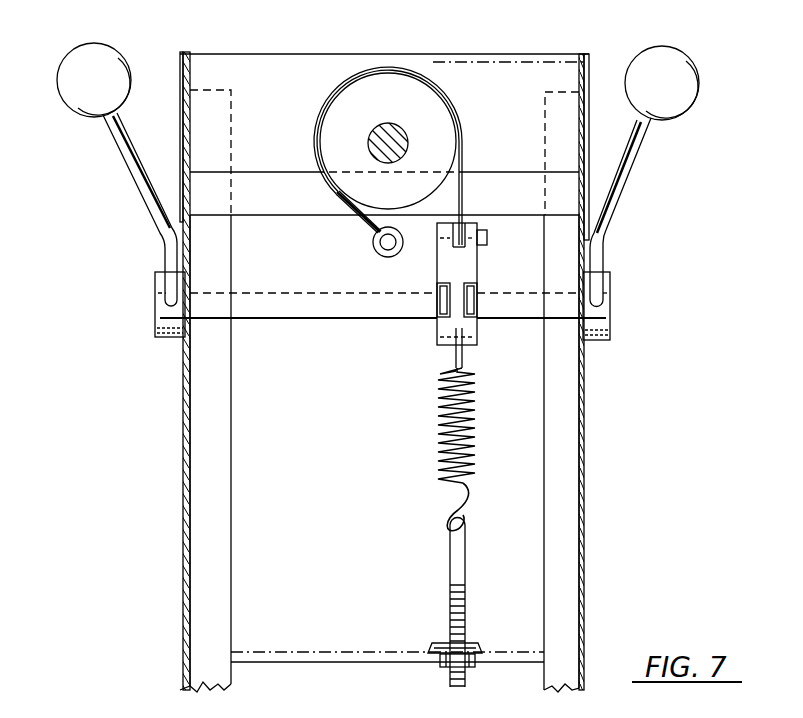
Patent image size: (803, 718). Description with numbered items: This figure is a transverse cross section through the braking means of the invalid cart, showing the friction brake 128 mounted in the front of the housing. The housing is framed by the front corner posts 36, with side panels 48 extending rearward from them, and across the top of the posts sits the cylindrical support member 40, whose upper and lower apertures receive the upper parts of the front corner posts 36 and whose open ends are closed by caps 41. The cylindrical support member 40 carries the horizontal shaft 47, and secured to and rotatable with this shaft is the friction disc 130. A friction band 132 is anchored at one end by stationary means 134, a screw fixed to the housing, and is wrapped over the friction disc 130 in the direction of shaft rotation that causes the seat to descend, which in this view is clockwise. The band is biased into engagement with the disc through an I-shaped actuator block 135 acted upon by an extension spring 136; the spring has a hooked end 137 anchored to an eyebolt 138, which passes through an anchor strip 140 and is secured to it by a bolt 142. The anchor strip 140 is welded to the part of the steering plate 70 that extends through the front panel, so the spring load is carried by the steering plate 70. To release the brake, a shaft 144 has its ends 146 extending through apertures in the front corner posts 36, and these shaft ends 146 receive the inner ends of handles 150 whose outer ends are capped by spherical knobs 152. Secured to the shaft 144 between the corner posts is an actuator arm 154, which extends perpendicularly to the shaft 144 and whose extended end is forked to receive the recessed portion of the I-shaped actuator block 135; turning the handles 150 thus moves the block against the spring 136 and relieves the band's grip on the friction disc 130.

The front corner posts 36 is at (232, 115).
The cylindrical support member 40 is at (550, 58).
The caps 41 is at (178, 78).
The horizontal shaft 47 is at (380, 145).
The side panels 48 is at (590, 402).
The steering plate 70 is at (260, 652).
The friction brake 128 is at (418, 75).
The friction disc 130 is at (406, 107).
The friction band 132 is at (337, 85).
The stationary means 134 is at (380, 250).
The I-shaped actuator block 135 is at (438, 326).
The extension spring 136 is at (440, 414).
The hooked end 137 is at (437, 510).
The eyebolt 138 is at (449, 542).
The anchor strip 140 is at (432, 647).
The bolt 142 is at (440, 663).
The shaft 144 is at (297, 305).
The shaft ends 146 is at (160, 314).
The handles 150 is at (138, 170).
The spherical knobs 152 is at (88, 108).
The actuator arm 154 is at (480, 305).